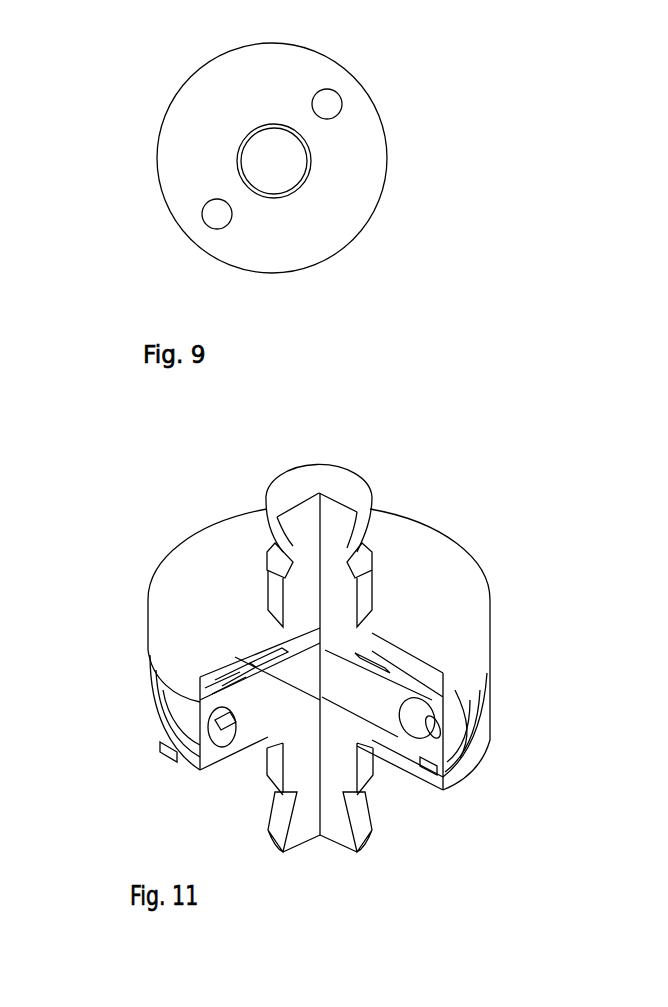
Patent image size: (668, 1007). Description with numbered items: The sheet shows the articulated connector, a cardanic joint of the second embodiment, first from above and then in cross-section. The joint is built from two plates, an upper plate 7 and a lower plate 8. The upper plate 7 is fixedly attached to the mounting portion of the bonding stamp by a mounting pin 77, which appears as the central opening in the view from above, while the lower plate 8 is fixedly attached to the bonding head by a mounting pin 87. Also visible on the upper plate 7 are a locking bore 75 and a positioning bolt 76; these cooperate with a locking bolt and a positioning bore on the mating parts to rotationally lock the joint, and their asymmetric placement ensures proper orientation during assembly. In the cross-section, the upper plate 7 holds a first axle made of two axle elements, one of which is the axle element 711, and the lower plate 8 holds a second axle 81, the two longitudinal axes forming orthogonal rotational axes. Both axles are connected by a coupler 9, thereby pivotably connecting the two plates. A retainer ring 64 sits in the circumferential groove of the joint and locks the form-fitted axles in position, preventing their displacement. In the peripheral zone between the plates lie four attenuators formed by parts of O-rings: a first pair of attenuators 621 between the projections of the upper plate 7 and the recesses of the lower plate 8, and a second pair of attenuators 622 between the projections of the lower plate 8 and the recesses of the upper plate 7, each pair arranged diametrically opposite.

In FIG. 11, the upper plate 7 is at (453, 597).
In FIG. 11, the lower plate 8 is at (160, 732).
In FIG. 11, the coupler 9 is at (373, 670).
In FIG. 11, the retainer ring 64 is at (493, 712).
In FIG. 9, the locking bore 75 is at (217, 217).
In FIG. 9, the positioning bolt 76 is at (332, 104).
In FIG. 9, the mounting pin 77 is at (260, 155).
In FIG. 11, the mounting pin 77 is at (305, 490).
In FIG. 11, the second axle 81 is at (200, 777).
In FIG. 11, the mounting pin 87 is at (282, 812).
In FIG. 11, the attenuator 621 is at (217, 690).
In FIG. 11, the attenuator 622 is at (437, 765).
In FIG. 11, the axle element 711 is at (372, 690).